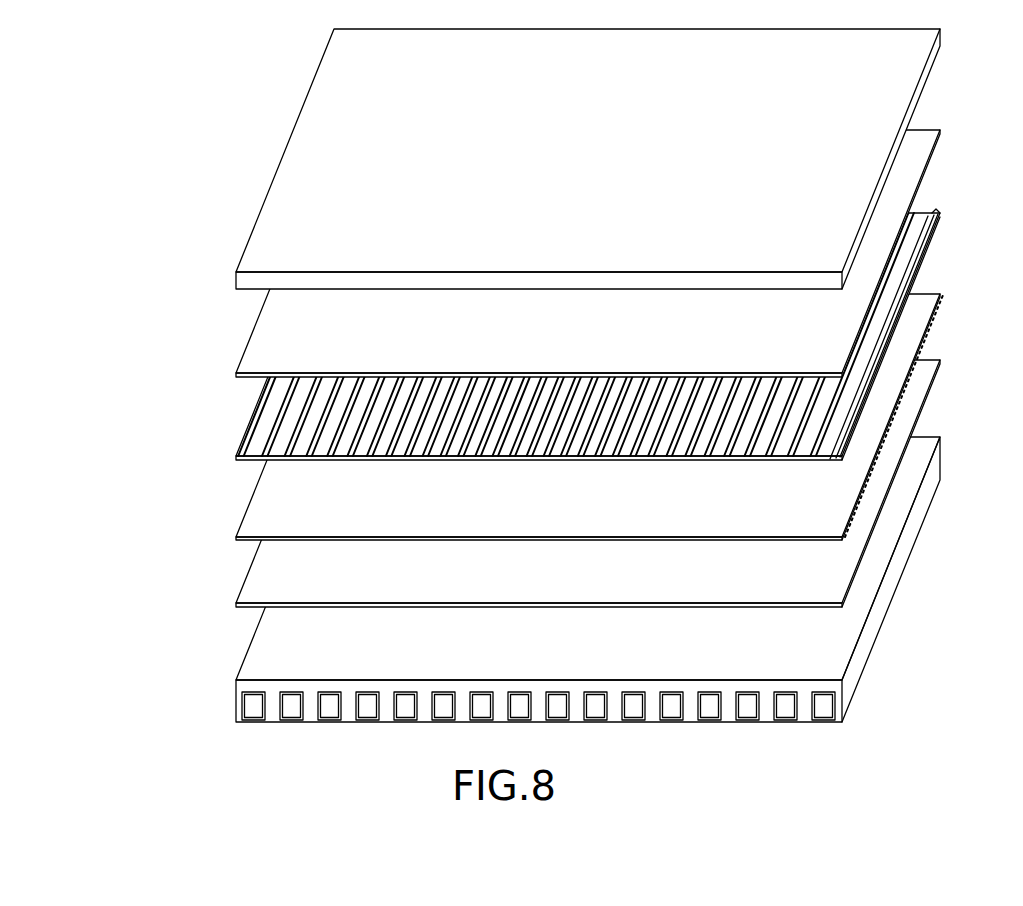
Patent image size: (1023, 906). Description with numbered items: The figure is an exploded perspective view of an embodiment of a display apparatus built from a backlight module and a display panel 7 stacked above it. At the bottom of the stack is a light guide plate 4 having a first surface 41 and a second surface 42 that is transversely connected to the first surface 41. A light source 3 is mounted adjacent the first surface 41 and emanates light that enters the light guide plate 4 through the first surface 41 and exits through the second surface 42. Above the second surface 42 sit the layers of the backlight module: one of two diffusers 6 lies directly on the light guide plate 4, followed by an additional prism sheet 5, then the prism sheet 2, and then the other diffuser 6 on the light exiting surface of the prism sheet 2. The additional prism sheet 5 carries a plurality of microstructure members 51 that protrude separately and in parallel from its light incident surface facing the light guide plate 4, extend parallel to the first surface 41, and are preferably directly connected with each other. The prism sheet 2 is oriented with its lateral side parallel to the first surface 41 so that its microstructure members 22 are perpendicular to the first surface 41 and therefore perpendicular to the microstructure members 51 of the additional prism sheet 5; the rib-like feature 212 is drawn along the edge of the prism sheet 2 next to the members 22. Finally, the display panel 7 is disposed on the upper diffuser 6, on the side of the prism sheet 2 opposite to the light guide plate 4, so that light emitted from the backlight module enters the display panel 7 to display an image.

The display panel 7 is at (305, 119).
The diffusers 6 is at (222, 333).
The prism sheet 2 is at (222, 415).
The fin rib 212 is at (822, 404).
The microstructure members 22 is at (822, 436).
The additional prism sheet 5 is at (222, 493).
The microstructure members 51 is at (934, 316).
The second surface 42 is at (285, 637).
The light guide plate 4 is at (850, 630).
The first surface 41 is at (838, 686).
The light source 3 is at (222, 696).